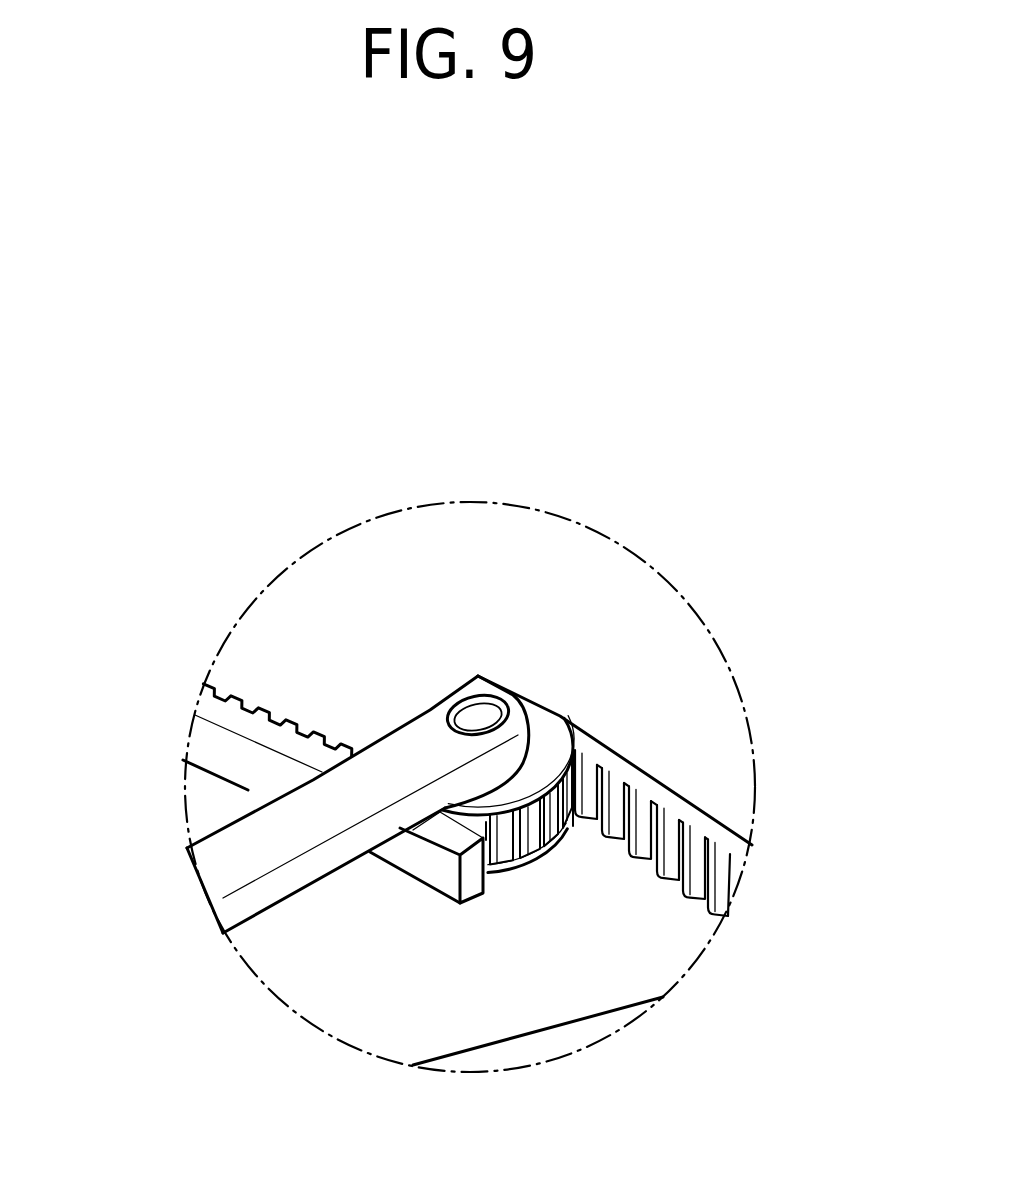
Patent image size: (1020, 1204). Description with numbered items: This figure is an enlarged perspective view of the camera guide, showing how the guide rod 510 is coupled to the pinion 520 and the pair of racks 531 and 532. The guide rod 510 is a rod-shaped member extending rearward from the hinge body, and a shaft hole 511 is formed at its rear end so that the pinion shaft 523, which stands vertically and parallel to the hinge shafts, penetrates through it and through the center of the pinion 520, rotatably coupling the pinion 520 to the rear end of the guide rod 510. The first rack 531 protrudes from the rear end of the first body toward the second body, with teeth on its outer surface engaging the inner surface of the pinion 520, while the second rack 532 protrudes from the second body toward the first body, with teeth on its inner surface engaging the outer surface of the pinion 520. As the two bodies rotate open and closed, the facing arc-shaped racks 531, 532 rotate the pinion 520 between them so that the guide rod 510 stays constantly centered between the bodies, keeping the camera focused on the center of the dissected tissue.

The guide rod 510 is at (237, 863).
The shaft hole 511 is at (505, 708).
The pinion 520 is at (540, 738).
The pinion shaft 523 is at (478, 711).
The first rack 531 is at (213, 743).
The second rack 532 is at (695, 813).